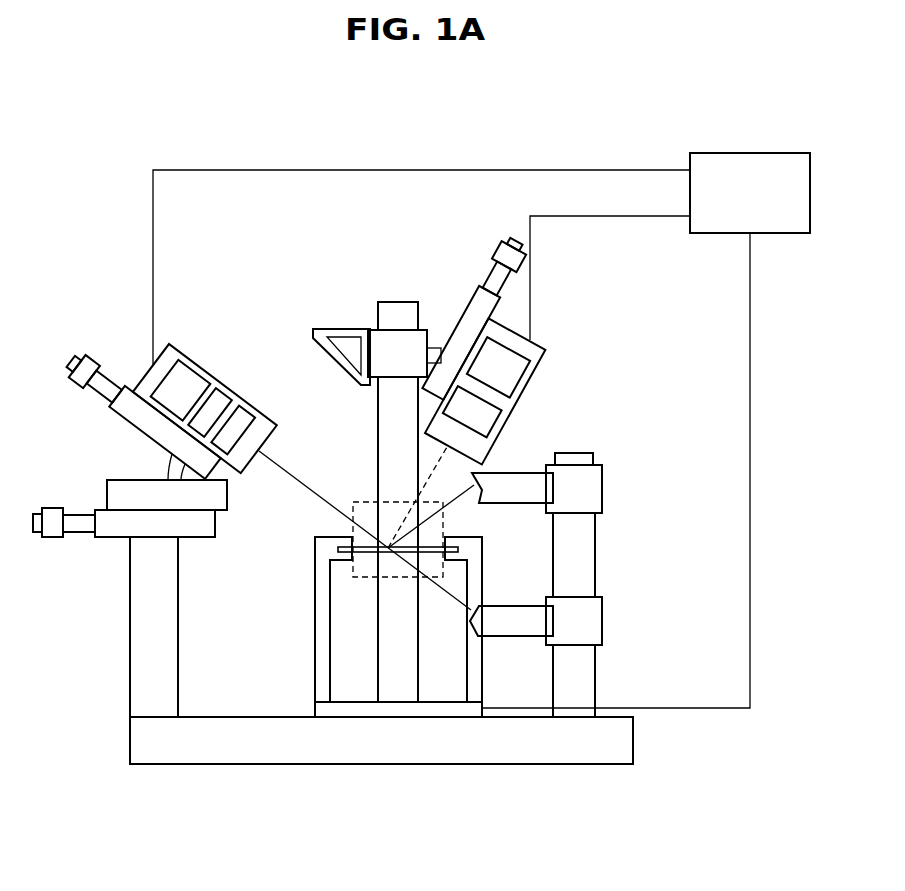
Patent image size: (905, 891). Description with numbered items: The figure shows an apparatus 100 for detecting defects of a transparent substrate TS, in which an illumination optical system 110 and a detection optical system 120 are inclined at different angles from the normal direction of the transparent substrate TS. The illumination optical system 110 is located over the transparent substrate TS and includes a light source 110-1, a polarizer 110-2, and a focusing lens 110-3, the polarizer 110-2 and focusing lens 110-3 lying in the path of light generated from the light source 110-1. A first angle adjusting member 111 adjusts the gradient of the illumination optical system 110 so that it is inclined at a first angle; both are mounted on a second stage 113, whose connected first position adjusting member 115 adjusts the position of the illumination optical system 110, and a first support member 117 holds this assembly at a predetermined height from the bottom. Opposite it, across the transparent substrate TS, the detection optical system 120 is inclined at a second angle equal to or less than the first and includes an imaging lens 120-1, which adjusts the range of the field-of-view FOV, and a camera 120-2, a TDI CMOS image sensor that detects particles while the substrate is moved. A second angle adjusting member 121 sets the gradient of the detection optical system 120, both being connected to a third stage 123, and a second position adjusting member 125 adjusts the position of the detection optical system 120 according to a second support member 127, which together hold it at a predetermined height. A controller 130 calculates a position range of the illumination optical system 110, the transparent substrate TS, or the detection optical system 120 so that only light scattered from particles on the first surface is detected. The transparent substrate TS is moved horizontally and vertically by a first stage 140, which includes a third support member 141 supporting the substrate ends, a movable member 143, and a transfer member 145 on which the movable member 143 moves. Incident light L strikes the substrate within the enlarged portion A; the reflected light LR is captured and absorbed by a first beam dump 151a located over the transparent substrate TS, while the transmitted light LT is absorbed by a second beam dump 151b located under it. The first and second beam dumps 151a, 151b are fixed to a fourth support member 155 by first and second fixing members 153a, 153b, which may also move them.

The apparatus for detecting defects of a transparent substrate 100 is at (833, 86).
The illumination optical system 110 is at (197, 397).
The light source 110-1 is at (187, 370).
The polarizer 110-2 is at (220, 398).
The focusing lens 110-3 is at (250, 418).
The first angle adjusting member 111 is at (78, 362).
The second stage 113 is at (112, 500).
The first position adjusting member 115 is at (75, 522).
The first support member 117 is at (140, 648).
The detection optical system 120 is at (542, 362).
The imaging lens 120-1 is at (493, 423).
The camera 120-2 is at (520, 372).
The second angle adjusting member 121 is at (503, 255).
The third stage 123 is at (378, 338).
The second position adjusting member 125 is at (344, 329).
The second support member 127 is at (406, 305).
The controller 130 is at (752, 160).
The first stage 140 is at (381, 622).
The third support member 141 is at (320, 708).
The movable member 143 is at (397, 708).
The transfer member 145 is at (300, 822).
The first beam dump 151a is at (538, 482).
The second beam dump 151b is at (538, 613).
The first fixing member 153a is at (595, 503).
The second fixing member 153b is at (595, 636).
The fourth support member 155 is at (585, 683).
The transparent substrate TS is at (338, 551).
The portion A is at (369, 578).
The incident light L is at (293, 478).
The reflected light LR is at (452, 502).
The transmitted light LT is at (428, 585).
The field-of-view FOV is at (433, 462).